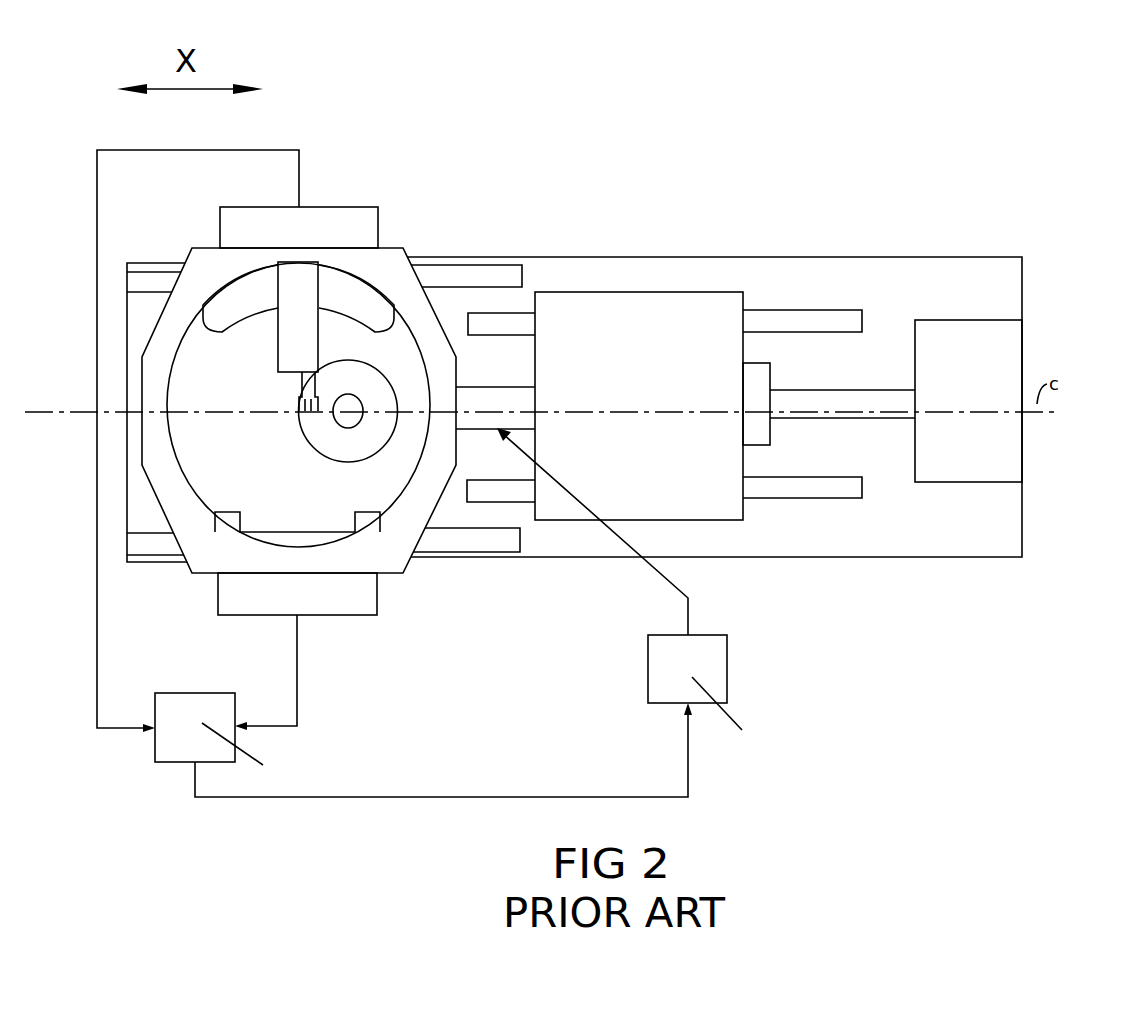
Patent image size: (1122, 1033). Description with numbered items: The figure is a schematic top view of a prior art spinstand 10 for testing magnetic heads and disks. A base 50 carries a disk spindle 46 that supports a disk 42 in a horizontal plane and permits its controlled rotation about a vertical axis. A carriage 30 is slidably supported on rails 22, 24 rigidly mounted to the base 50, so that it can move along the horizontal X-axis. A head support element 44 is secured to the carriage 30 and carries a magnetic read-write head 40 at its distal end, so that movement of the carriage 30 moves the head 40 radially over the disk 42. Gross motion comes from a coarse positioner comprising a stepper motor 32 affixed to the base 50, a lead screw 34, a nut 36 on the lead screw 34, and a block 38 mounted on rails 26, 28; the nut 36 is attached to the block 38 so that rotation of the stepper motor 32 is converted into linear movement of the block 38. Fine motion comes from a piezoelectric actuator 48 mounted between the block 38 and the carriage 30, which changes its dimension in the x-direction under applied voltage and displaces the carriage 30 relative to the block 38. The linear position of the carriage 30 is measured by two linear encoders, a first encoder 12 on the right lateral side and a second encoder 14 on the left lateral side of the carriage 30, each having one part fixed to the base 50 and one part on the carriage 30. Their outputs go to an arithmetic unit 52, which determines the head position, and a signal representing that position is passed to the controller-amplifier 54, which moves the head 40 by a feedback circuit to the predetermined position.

The spinstand 10 is at (1109, 220).
The first encoder 12 is at (365, 223).
The second encoder 14 is at (367, 602).
The rail 22 is at (498, 278).
The rail 24 is at (492, 542).
The rail 26 is at (822, 320).
The rail 28 is at (780, 487).
The carriage 30 is at (440, 236).
The stepper motor 32 is at (970, 353).
The lead screw 34 is at (868, 403).
The nut 36 is at (753, 383).
The block 38 is at (692, 320).
The magnetic read-write head 40 is at (303, 410).
The disk 42 is at (352, 420).
The head support element 44 is at (300, 277).
The disk spindle 46 is at (347, 442).
The piezoelectric actuator 48 is at (500, 403).
The base 50 is at (975, 523).
The arithmetic unit 52 is at (185, 723).
The controller-amplifier 54 is at (700, 657).